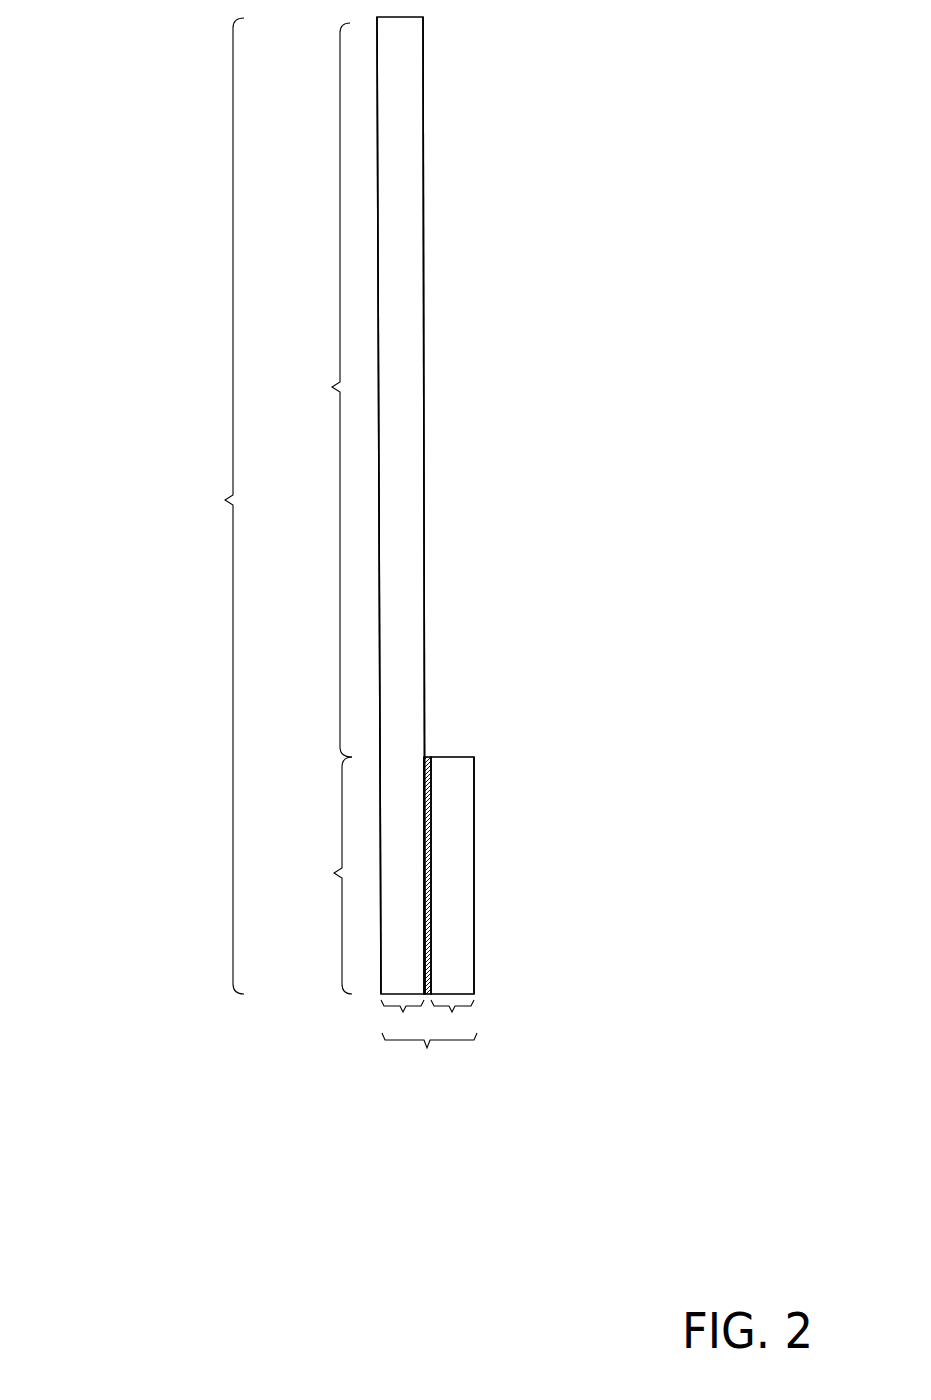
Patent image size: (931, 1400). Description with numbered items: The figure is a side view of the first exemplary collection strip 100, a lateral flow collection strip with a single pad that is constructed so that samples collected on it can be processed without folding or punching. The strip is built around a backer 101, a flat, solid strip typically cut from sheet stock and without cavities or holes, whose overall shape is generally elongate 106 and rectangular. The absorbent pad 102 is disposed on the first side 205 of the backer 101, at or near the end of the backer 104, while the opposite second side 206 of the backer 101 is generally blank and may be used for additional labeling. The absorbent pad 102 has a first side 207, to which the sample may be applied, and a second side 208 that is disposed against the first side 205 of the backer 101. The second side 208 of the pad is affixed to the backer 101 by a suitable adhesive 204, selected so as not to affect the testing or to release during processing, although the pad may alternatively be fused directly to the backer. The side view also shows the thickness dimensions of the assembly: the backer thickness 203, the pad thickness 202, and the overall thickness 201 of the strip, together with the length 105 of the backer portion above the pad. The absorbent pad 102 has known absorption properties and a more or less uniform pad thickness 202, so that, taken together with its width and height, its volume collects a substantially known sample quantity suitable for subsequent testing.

The first exemplary collection strip 100 is at (504, 671).
The backer 101 is at (405, 532).
The absorbent pad 102 is at (453, 920).
The end of the backer 104 is at (320, 875).
The backer-only region length 105 is at (317, 390).
The elongate shape of the backer 106 is at (202, 506).
The overall thickness 201 is at (423, 1085).
The pad thickness 202 is at (452, 1012).
The backer thickness 203 is at (403, 1012).
The adhesive 204 is at (430, 807).
The first side of the backer 205 is at (423, 223).
The second side of the backer 206 is at (377, 224).
The first side of the absorbent pad 207 is at (474, 979).
The second side of the absorbent pad 208 is at (424, 978).